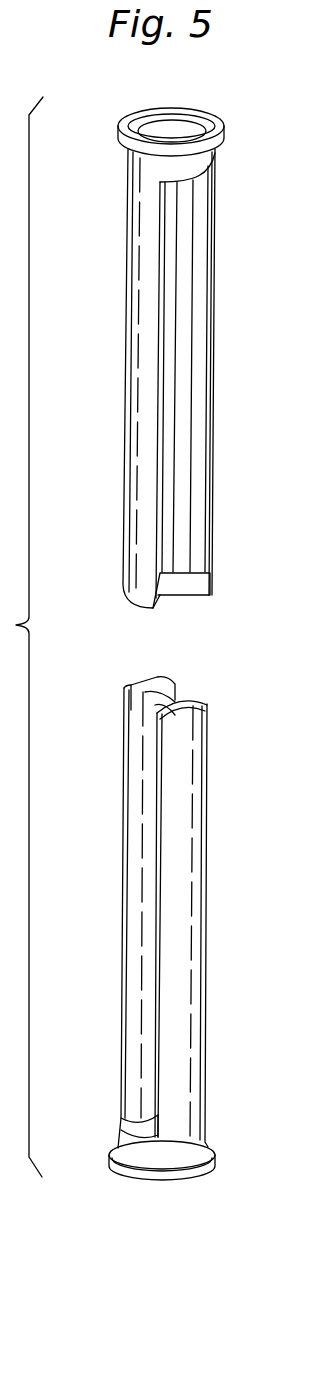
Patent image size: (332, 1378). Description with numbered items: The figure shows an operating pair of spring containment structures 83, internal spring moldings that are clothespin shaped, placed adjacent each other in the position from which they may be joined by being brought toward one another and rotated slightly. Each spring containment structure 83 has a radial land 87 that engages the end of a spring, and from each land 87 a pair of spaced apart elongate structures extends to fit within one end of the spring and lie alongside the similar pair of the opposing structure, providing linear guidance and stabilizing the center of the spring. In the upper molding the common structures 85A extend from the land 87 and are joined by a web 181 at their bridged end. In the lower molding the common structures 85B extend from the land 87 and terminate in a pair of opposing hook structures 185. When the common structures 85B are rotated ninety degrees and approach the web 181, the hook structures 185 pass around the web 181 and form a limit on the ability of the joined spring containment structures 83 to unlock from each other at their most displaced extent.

The spring containment structure 83 is at (238, 338).
The common structures 85A is at (215, 232).
The common structures 85B is at (198, 835).
The radial land 87 is at (223, 137).
The web 181 is at (172, 585).
The hook structures 185 is at (133, 720).